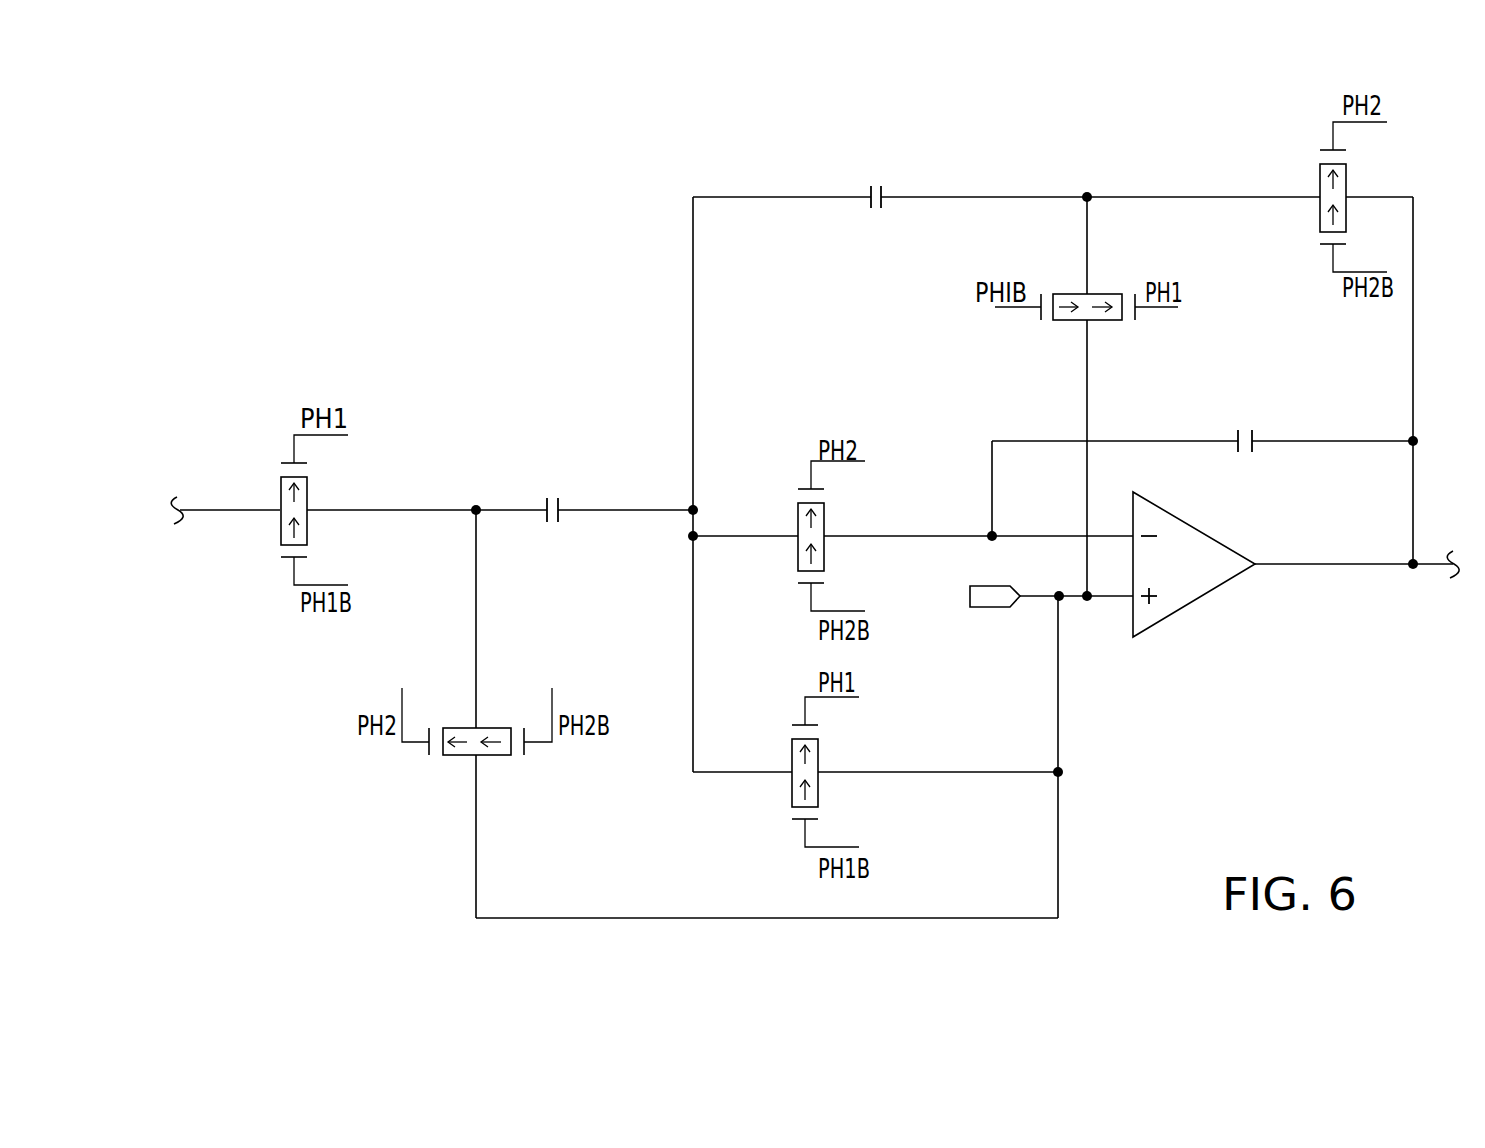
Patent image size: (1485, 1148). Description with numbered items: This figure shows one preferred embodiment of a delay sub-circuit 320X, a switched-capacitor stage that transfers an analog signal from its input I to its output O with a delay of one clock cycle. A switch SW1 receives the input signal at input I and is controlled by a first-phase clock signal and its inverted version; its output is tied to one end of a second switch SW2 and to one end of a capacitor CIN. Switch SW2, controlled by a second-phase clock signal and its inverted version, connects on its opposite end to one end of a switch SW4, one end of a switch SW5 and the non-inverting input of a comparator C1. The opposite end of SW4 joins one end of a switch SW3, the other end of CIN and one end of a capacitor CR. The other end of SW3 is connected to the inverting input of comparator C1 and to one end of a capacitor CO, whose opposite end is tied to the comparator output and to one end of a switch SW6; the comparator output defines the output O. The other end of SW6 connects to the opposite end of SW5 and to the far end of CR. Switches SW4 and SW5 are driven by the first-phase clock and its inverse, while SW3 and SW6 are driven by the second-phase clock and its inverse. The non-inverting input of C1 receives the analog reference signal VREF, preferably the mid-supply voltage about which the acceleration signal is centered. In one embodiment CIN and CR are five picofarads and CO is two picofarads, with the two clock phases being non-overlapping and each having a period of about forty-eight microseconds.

The delay sub-circuit 320X is at (503, 303).
The switch SW1 is at (318, 510).
The second switch SW2 is at (477, 721).
The switch SW3 is at (834, 536).
The switch SW4 is at (830, 772).
The switch SW5 is at (1086, 291).
The switch SW6 is at (1356, 197).
The capacitor CIN is at (553, 494).
The capacitor CR is at (878, 181).
The capacitor CO is at (1244, 424).
The comparator C1 is at (1194, 564).
The analog reference signal VREF is at (966, 598).
The input I is at (165, 511).
The output O is at (1463, 566).